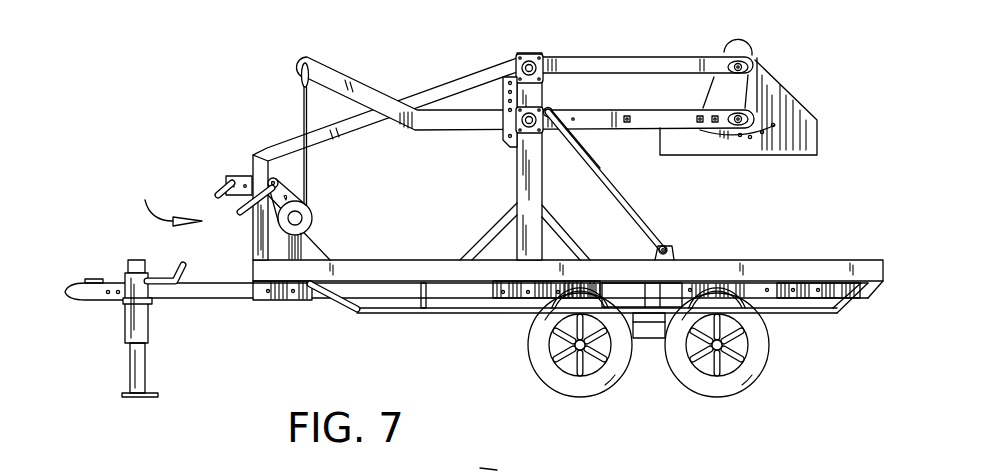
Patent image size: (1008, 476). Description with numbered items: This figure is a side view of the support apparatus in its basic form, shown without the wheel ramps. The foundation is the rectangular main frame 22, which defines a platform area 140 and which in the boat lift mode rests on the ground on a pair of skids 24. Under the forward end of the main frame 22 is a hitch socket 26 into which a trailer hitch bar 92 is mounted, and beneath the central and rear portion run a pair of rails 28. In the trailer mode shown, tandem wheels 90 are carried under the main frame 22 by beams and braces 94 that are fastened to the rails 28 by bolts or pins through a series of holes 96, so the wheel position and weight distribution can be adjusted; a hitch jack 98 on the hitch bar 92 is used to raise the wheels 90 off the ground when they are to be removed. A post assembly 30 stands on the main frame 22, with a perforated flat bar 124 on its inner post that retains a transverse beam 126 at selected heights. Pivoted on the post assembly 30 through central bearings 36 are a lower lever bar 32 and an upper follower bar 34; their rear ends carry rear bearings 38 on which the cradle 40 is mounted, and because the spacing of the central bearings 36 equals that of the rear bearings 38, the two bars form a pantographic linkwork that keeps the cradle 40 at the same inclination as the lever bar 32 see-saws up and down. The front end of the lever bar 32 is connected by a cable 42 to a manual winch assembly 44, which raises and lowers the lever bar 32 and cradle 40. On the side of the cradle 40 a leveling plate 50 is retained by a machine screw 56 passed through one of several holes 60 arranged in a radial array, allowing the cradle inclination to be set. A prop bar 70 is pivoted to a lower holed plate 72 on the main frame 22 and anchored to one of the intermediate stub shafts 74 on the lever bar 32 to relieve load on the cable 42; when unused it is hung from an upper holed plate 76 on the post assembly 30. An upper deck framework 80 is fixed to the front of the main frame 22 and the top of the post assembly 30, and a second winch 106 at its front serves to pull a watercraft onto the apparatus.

The main frame 22 is at (372, 272).
The platform area 140 is at (568, 318).
The skids 24 is at (340, 307).
The hitch socket 26 is at (285, 302).
The rails 28 is at (493, 292).
The post assembly 30 is at (513, 173).
The lever bar 32 is at (330, 65).
The follower bar 34 is at (572, 66).
The central bearing 36 is at (518, 53).
The rear bearing 38 is at (757, 133).
The cradle 40 is at (818, 127).
The cable 42 is at (312, 165).
The winch assembly 44 is at (163, 197).
The leveling plate 50 is at (763, 97).
The machine screw 56 is at (735, 138).
The holes 60 is at (773, 123).
The prop bar 70 is at (652, 223).
The lower holed plate 72 is at (673, 253).
The intermediate stub shaft 74 is at (630, 114).
The upper holed plate 76 is at (547, 103).
The upper deck framework 80 is at (285, 138).
The tandem wheels 90 is at (733, 390).
The trailer hitch bar 92 is at (207, 300).
The beams and braces 94 is at (653, 337).
The holes 96 is at (767, 283).
The hitch jack 98 is at (128, 325).
The second winch 106 is at (233, 174).
The perforated flat bar 124 is at (503, 83).
The transverse beam 126 is at (512, 465).